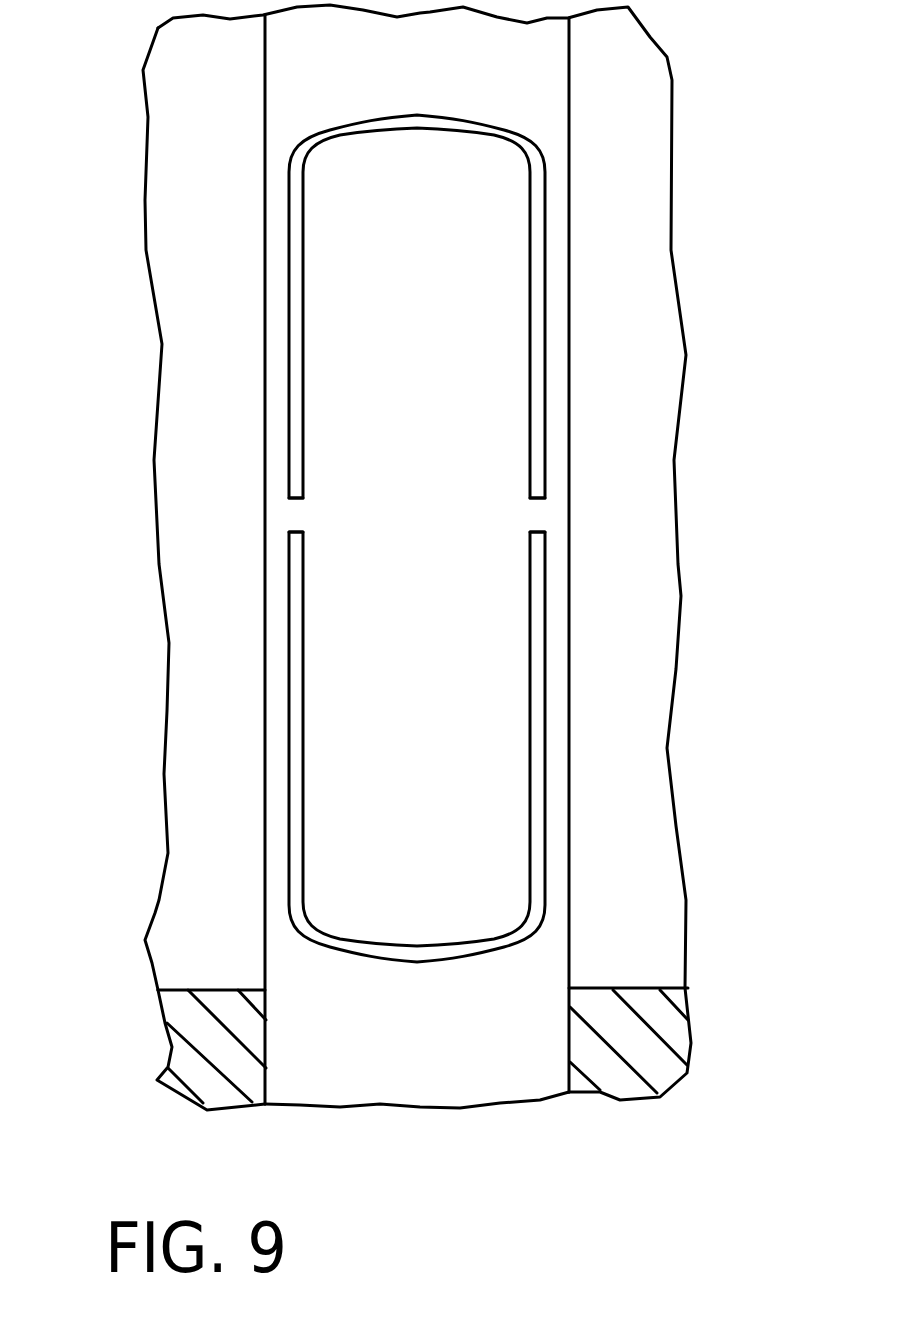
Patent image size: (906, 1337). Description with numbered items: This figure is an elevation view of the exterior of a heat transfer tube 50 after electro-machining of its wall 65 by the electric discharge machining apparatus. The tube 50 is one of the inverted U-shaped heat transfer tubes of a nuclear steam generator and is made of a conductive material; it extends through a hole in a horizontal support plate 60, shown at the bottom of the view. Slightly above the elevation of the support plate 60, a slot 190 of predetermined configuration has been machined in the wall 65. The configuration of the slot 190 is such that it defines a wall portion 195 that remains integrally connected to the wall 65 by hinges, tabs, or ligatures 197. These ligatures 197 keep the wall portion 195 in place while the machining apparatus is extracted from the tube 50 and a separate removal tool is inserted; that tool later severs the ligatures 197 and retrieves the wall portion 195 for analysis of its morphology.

The heat transfer tube 50 is at (569, 143).
The horizontal support plate 60 is at (608, 1007).
The tube wall 65 is at (263, 705).
The slot 190 is at (533, 247).
The wall portion 195 is at (492, 678).
The ligatures 197 is at (533, 515).